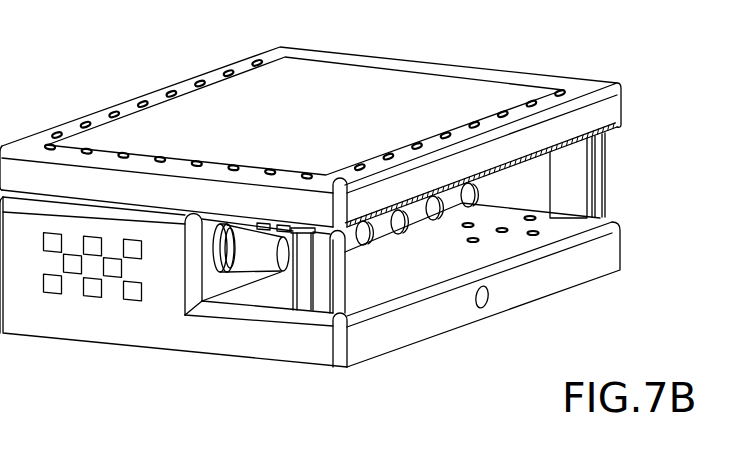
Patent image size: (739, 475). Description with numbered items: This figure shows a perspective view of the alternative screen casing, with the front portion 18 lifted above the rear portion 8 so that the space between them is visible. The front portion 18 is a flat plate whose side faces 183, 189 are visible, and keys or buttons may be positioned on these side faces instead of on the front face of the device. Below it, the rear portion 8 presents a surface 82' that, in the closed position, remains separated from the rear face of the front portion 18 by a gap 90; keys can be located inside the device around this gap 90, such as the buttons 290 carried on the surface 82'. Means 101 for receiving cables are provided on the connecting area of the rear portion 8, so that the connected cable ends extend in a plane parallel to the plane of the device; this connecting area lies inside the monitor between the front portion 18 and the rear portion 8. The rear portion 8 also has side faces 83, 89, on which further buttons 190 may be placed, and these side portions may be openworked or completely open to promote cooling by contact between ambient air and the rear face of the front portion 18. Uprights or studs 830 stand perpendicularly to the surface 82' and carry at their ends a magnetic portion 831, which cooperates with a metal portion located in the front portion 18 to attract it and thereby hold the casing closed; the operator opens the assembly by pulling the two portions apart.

The front portion 18 is at (577, 90).
The side face of the front portion 189 is at (118, 196).
The side face of the front portion 183 is at (542, 132).
The rear portion 8 is at (201, 341).
The side face of the rear portion 89 is at (174, 335).
The buttons 190 is at (90, 295).
The upright or stud 830 is at (308, 302).
The means for receiving cables 101 is at (257, 262).
The magnetic portion 831 is at (303, 232).
The gap 90 is at (401, 275).
The surface 82' is at (479, 296).
The buttons 290 is at (541, 233).
The side face of the rear portion 83 is at (575, 280).